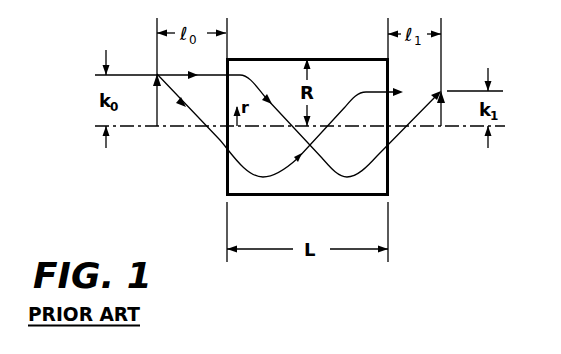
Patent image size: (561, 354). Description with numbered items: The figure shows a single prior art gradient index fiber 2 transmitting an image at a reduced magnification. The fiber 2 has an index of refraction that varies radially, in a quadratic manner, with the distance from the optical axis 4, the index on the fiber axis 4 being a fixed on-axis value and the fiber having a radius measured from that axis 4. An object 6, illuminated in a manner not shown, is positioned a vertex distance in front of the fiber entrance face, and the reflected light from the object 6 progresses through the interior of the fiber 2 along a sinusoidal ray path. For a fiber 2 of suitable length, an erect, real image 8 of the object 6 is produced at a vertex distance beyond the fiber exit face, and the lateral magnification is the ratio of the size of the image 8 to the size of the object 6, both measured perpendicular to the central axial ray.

The gradient index fiber 2 is at (323, 59).
The optical axis 4 is at (335, 128).
The object 6 is at (157, 116).
The erect image 8 is at (441, 113).